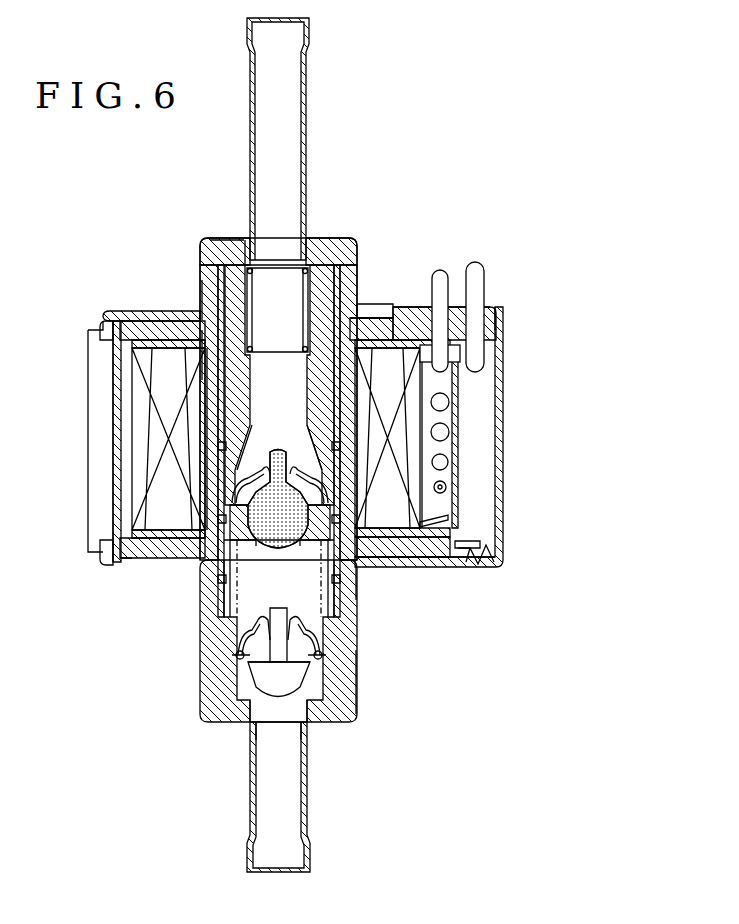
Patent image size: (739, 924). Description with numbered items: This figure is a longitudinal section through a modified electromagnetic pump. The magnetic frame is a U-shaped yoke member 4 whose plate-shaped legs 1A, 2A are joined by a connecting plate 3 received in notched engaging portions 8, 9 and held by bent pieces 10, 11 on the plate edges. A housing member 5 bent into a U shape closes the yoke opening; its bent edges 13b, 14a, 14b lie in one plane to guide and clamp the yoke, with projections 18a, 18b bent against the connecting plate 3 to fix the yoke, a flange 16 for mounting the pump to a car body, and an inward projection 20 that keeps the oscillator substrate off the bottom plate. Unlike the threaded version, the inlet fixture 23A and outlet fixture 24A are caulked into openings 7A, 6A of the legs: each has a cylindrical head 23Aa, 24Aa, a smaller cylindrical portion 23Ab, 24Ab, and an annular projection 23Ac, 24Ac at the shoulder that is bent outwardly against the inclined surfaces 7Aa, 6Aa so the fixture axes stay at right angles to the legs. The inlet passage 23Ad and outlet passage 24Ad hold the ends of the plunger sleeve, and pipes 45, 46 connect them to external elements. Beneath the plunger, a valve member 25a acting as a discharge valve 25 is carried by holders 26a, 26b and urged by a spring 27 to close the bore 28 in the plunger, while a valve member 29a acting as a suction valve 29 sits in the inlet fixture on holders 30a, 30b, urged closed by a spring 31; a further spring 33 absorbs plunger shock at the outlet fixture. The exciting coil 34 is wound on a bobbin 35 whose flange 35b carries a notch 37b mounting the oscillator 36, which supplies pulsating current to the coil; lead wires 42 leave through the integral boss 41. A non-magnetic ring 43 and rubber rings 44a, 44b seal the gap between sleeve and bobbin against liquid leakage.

The leg 1A is at (380, 316).
The leg 2A is at (403, 550).
The connecting plate 3 is at (113, 490).
The yoke member 4 is at (113, 406).
The housing member 5 is at (503, 348).
The opening 6A is at (346, 312).
The inclined surface 6Aa is at (373, 328).
The opening 7A is at (205, 565).
The inclined surface 7Aa is at (197, 538).
The engaging portion 8 is at (112, 322).
The engaging portion 9 is at (120, 567).
The bent piece 10 is at (137, 322).
The bent piece 11 is at (134, 558).
The bent edge 13b is at (480, 568).
The bent edge 14a is at (432, 330).
The bent edge 14b is at (408, 548).
The flange 16 is at (96, 437).
The projection 18a is at (100, 320).
The projection 18b is at (110, 558).
The projection 20 is at (483, 547).
The inlet fixture 23A is at (360, 722).
The head 23Aa is at (352, 690).
The cylindrical portion 23Ab is at (358, 570).
The annular projection 23Ac is at (362, 556).
The inlet passage 23Ad is at (313, 688).
The outlet fixture 24A is at (358, 238).
The head 24Aa is at (212, 260).
The cylindrical portion 24Ab is at (208, 340).
The annular projection 24Ac is at (212, 300).
The outlet passage 24Ad is at (236, 262).
The discharge valve 25 is at (258, 542).
The valve member 25a is at (283, 542).
The holder 26a is at (276, 455).
The holder 26b is at (340, 518).
The spring 27 is at (338, 478).
The bore 28 is at (276, 380).
The suction valve 29 is at (274, 609).
The valve member 29a is at (252, 725).
The holder 30a is at (295, 628).
The holder 30b is at (278, 687).
The spring 31 is at (312, 623).
The spring 33 is at (327, 290).
The exciting coil 34 is at (402, 490).
The bobbin 35 is at (352, 376).
The flange 35b is at (465, 565).
The oscillator 36 is at (462, 400).
The notch 37b is at (473, 530).
The boss 41 is at (500, 312).
The lead wires 42 is at (484, 270).
The non-magnetic ring 43 is at (158, 562).
The rubber ring 44a is at (220, 448).
The rubber ring 44b is at (221, 583).
The pipe 45 is at (290, 824).
The pipe 46 is at (308, 97).